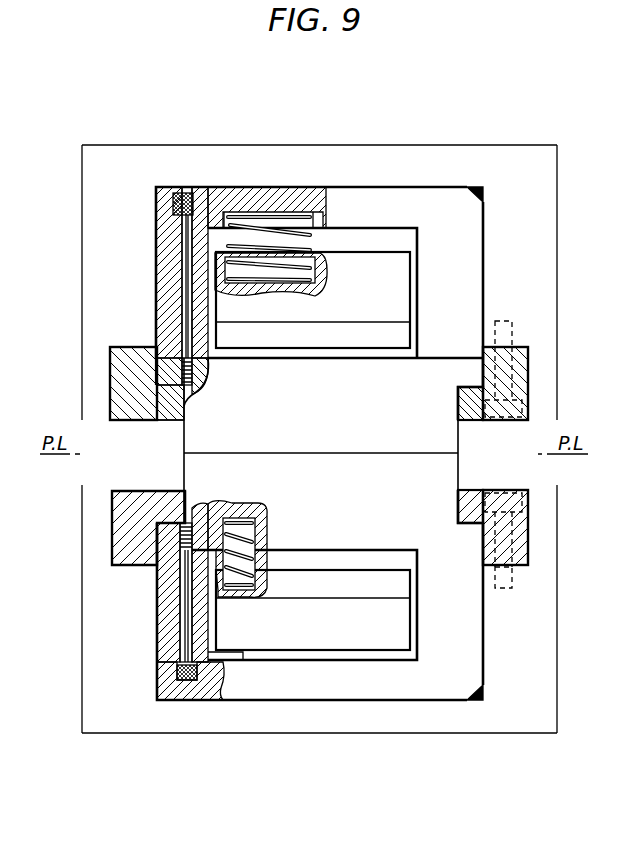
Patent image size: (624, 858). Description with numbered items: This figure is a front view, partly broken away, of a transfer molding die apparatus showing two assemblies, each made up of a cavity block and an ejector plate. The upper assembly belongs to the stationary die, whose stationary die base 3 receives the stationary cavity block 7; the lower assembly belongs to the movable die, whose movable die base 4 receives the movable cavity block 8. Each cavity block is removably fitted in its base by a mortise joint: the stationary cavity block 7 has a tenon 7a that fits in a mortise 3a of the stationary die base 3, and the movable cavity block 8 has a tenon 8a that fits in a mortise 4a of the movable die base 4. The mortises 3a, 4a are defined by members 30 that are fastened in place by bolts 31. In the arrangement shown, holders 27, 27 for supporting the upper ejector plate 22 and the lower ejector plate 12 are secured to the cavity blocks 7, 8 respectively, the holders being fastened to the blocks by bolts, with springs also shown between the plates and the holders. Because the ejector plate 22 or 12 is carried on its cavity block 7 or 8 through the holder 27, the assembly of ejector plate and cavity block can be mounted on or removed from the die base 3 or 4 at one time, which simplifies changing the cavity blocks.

The stationary die base 3 is at (80, 274).
The movable die base 4 is at (82, 627).
The stationary cavity block 7 is at (183, 433).
The movable cavity block 8 is at (183, 470).
The tenon 7a is at (173, 373).
The tenon 8a is at (160, 532).
The mortise 3a is at (470, 386).
The mortise 4a is at (475, 525).
The lower ejector plate 12 is at (333, 632).
The upper ejector plate 22 is at (375, 250).
The holder 27 is at (465, 241).
The member defining mortise 30 is at (127, 363).
The bolt 31 is at (507, 335).